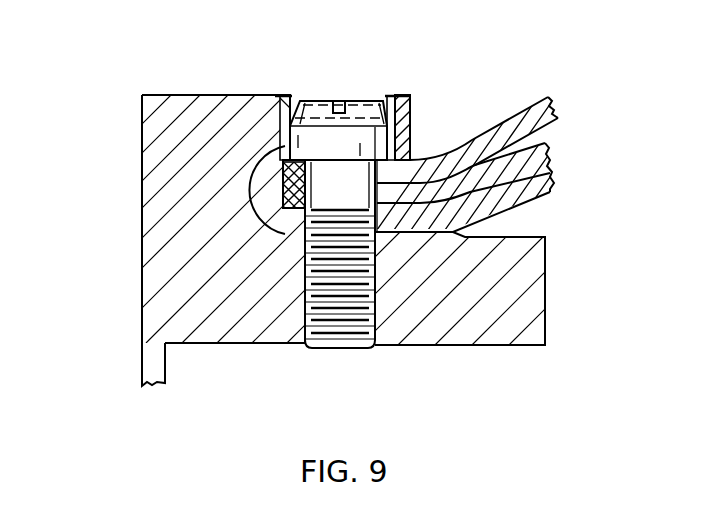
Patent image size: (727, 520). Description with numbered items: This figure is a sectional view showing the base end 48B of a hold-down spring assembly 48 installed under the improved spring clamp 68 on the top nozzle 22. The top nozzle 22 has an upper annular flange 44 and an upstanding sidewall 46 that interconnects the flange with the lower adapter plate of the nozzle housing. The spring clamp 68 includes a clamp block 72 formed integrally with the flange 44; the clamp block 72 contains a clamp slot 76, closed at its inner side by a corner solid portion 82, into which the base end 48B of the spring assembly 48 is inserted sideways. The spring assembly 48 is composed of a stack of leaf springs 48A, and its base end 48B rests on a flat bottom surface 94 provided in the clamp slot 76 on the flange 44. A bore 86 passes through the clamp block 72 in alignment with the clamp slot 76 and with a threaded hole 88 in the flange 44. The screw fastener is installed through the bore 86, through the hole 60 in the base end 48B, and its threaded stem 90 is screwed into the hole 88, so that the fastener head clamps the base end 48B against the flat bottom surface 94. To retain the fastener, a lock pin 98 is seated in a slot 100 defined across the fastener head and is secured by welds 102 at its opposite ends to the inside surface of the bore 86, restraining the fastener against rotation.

The top nozzle 22 is at (566, 266).
The upper annular flange 44 is at (500, 335).
The upstanding sidewall 46 is at (170, 355).
The spring assembly 48 is at (528, 227).
The leaf springs 48A is at (508, 185).
The base end 48B is at (401, 222).
The hole 60 is at (303, 216).
The spring clamp 68 is at (208, 93).
The clamp block 72 is at (170, 95).
The clamp slot 76 is at (254, 176).
The corner solid portion 82 is at (142, 131).
The bore 86 is at (413, 126).
The hole 88 is at (308, 278).
The threaded stem 90 is at (352, 307).
The flat bottom surface 94 is at (455, 229).
The lock pin 98 is at (296, 101).
The slot 100 is at (339, 100).
The welds 102 is at (289, 97).